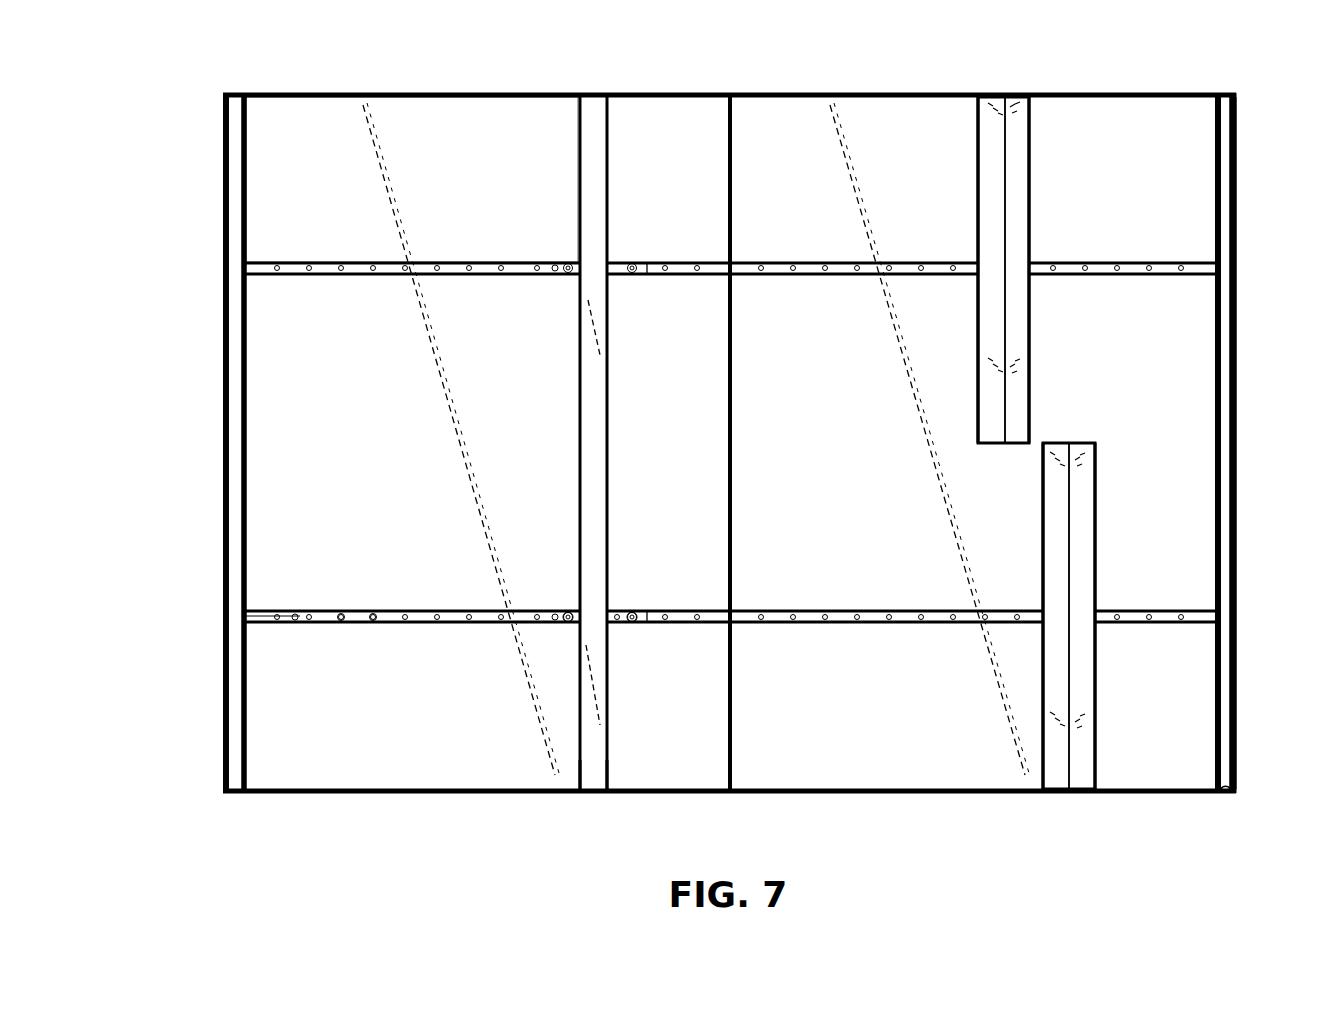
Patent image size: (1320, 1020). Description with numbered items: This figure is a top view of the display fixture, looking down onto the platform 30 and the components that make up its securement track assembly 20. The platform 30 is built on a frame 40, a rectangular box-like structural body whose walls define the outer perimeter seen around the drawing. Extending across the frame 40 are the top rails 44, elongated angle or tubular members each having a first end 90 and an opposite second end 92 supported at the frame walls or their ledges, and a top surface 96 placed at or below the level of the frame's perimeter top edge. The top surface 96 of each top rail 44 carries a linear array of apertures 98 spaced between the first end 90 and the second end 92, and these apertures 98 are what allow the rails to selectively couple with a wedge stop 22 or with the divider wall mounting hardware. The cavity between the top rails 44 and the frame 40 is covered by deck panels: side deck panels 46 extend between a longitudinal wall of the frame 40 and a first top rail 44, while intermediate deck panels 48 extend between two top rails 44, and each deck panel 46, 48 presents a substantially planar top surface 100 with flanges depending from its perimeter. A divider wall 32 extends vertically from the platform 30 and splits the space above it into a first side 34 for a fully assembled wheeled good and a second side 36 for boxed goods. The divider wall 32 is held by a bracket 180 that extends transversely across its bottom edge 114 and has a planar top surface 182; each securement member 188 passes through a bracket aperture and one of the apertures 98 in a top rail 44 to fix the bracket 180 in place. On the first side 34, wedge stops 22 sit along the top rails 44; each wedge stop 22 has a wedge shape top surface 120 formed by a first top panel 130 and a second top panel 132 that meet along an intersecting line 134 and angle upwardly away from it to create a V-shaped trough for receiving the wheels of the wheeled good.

The securement track assembly 20 is at (262, 246).
The wedge stop 22 is at (989, 172).
The platform 30 is at (320, 120).
The divider wall 32 is at (595, 120).
The first side 34 is at (798, 150).
The second side 36 is at (458, 120).
The frame 40 is at (232, 100).
The top rails 44 is at (262, 276).
The side deck panels 46 is at (265, 150).
The intermediate deck panels 48 is at (270, 458).
The first end 90 is at (1198, 622).
The second end 92 is at (277, 610).
The top surface 96 is at (296, 610).
The apertures 98 is at (342, 623).
The top surface 100 is at (1198, 527).
The top and bottom edges 114 is at (593, 772).
The wedge shape top surface 120 is at (1018, 105).
The first top panel 130 is at (990, 207).
The second top panel 132 is at (1020, 210).
The intersecting line 134 is at (1005, 167).
The bracket 180 is at (617, 623).
The top surface 182 is at (568, 623).
The securement member 188 is at (633, 623).